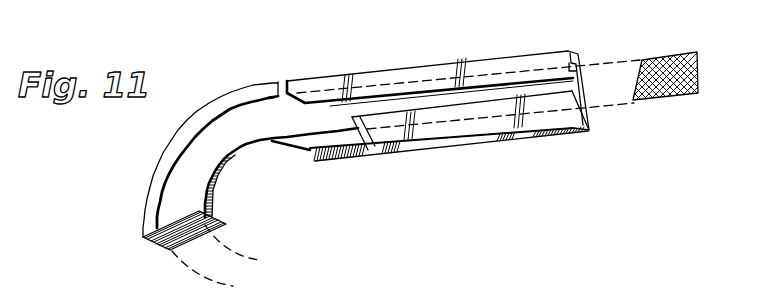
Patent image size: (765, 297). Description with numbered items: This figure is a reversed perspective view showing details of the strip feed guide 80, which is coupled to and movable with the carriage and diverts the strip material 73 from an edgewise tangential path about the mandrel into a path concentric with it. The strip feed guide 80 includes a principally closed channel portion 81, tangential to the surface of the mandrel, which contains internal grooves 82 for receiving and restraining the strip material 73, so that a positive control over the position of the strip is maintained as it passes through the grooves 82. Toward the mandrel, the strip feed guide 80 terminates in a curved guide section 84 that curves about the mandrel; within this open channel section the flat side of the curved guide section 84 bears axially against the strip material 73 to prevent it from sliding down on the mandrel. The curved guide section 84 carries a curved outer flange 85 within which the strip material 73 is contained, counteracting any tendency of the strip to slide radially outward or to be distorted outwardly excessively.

The strip material 73 is at (660, 102).
The strip feed guide 80 is at (391, 173).
The closed channel portion 81 is at (423, 70).
The internal grooves 82 is at (585, 63).
The curved guide section 84 is at (243, 139).
The outer flange 85 is at (200, 159).